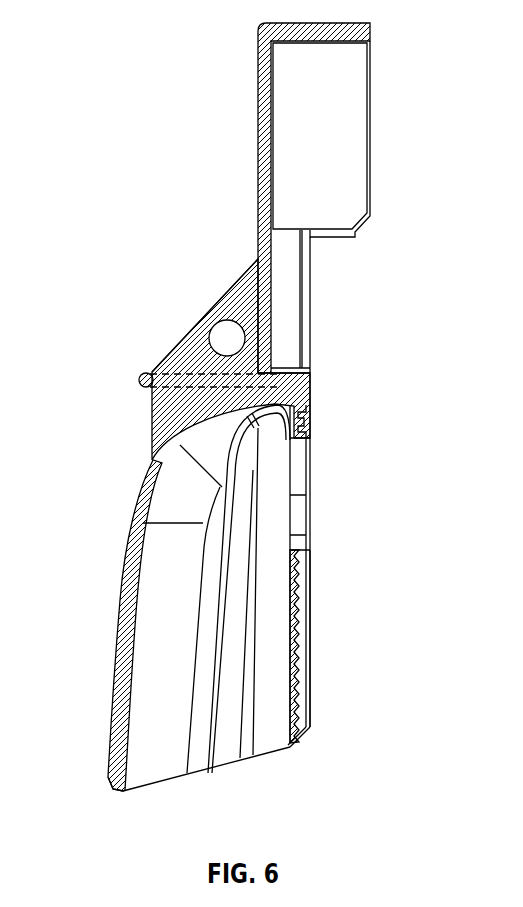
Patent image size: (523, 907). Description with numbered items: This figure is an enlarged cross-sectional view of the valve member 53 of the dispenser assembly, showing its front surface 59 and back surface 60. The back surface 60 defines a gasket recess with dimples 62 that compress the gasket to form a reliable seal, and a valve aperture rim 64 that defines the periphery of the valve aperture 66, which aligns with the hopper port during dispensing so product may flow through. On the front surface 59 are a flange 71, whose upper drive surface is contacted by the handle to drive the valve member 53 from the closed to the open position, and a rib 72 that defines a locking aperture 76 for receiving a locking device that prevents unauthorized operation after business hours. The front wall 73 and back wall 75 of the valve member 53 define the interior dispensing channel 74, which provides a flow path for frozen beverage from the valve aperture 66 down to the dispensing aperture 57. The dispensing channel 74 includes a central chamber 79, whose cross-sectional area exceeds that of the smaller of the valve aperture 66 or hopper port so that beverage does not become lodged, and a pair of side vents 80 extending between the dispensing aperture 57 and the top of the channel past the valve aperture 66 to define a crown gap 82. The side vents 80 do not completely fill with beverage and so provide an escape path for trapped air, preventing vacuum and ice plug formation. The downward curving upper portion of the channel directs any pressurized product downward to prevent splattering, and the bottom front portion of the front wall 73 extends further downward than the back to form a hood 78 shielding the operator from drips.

The valve member 53 is at (222, 230).
The dispensing aperture 57 is at (210, 773).
The front surface 59 is at (134, 430).
The back surface 60 is at (364, 246).
The dimples 62 is at (300, 600).
The valve aperture rim 64 is at (300, 700).
The valve aperture 66 is at (300, 470).
The flange 71 is at (143, 374).
The rib 72 is at (240, 285).
The front wall 73 is at (120, 618).
The dispensing channel 74 is at (158, 656).
The back wall 75 is at (348, 641).
The locking aperture 76 is at (218, 333).
The hood 78 is at (110, 770).
The central chamber 79 is at (158, 790).
The side vents 80 is at (253, 625).
The crown gap 82 is at (310, 372).